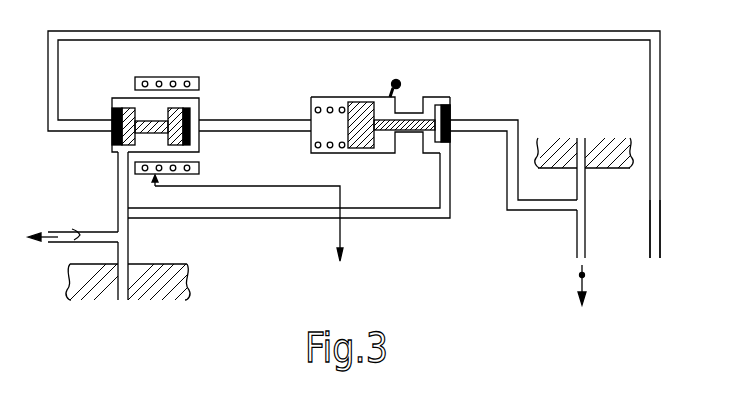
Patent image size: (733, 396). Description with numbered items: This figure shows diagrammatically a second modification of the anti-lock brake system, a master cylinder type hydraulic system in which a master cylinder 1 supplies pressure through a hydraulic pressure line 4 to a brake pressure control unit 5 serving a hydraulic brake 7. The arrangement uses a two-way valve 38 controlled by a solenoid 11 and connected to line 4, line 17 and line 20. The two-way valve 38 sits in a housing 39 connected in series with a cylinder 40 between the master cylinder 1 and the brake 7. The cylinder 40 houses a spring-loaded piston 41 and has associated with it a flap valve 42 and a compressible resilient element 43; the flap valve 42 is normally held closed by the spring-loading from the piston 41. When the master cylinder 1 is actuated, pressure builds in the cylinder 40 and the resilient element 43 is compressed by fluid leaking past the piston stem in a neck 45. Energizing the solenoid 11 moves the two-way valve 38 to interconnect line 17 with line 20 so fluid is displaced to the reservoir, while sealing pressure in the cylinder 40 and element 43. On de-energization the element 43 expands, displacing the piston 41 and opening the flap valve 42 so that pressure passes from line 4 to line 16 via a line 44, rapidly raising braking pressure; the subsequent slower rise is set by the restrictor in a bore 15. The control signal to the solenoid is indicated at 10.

The master cylinder 1 is at (580, 276).
The hydraulic pressure line 4 is at (580, 230).
The brake pressure control unit 5 is at (156, 265).
The hydraulic brake 7 is at (57, 240).
The control signal 10 is at (334, 250).
The solenoid 11 is at (200, 165).
The bore 15 is at (124, 290).
The line 16 is at (83, 220).
The line 17 is at (123, 180).
The line 20 is at (655, 212).
The two-way valve 38 is at (200, 98).
The housing 39 is at (200, 110).
The cylinder 40 is at (336, 157).
The spring-loaded piston 41 is at (362, 104).
The flap valve 42 is at (453, 110).
The compressible resilient element 43 is at (402, 82).
The line 44 is at (401, 213).
The neck 45 is at (405, 131).